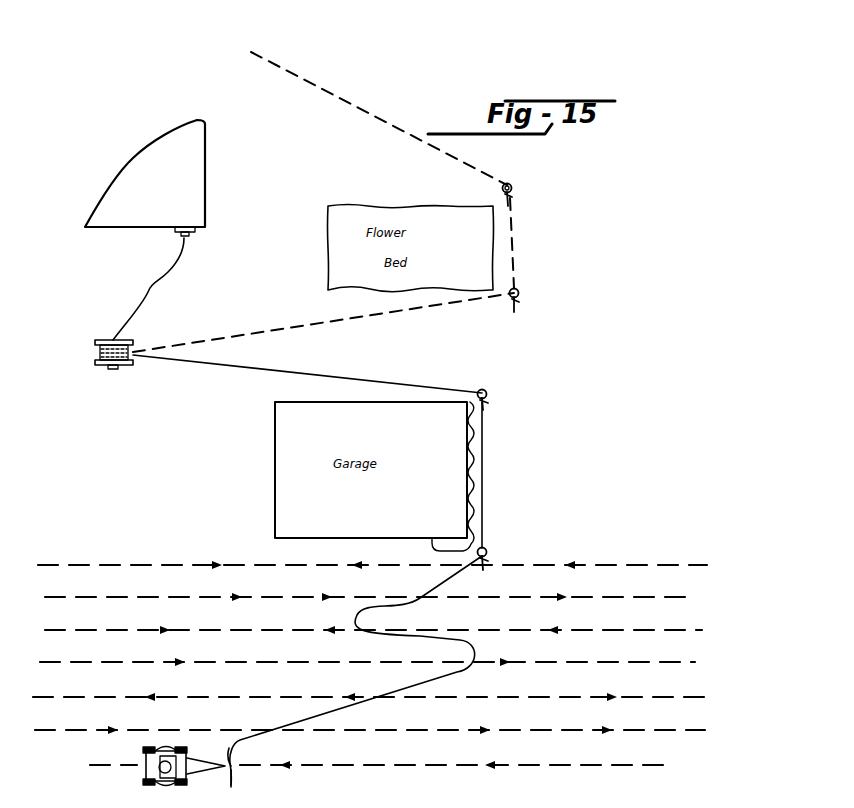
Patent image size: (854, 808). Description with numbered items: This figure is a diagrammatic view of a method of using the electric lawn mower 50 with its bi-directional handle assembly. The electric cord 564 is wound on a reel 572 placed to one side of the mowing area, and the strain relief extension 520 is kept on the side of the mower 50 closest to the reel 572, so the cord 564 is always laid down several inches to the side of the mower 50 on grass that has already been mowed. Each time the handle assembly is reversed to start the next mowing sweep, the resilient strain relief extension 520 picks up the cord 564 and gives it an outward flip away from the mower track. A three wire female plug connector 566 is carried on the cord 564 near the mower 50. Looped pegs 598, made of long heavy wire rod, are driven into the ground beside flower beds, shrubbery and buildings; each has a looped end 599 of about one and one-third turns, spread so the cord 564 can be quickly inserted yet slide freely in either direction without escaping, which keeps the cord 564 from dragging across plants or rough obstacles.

The mower 50 is at (172, 743).
The extension cable 564 is at (190, 362).
The three wire female plug connector 566 is at (231, 746).
The reel 572 is at (102, 370).
The looped pegs 598 is at (512, 184).
The looped end 599 is at (513, 191).
The strain relief extension 520 is at (231, 788).